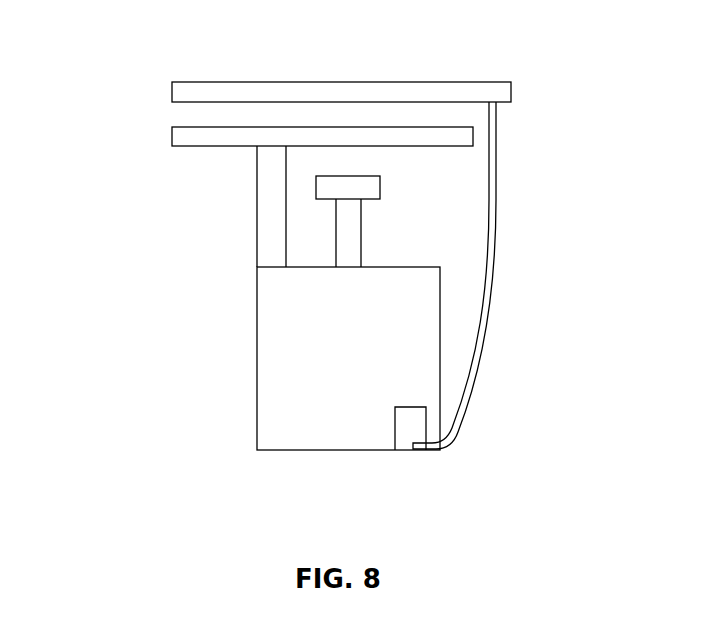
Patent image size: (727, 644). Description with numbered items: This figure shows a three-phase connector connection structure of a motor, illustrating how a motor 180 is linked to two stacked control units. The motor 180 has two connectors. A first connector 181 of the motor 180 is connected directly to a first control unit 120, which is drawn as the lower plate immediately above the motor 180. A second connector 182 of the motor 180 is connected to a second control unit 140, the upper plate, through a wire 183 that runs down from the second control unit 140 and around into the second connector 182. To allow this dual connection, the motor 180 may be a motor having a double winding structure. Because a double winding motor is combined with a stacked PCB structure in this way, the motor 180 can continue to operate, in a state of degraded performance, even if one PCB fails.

The first control unit 120 is at (178, 137).
The second control unit 140 is at (178, 92).
The motor 180 is at (265, 333).
The first connector 181 is at (263, 213).
The second connector 182 is at (402, 445).
The wire 183 is at (490, 238).